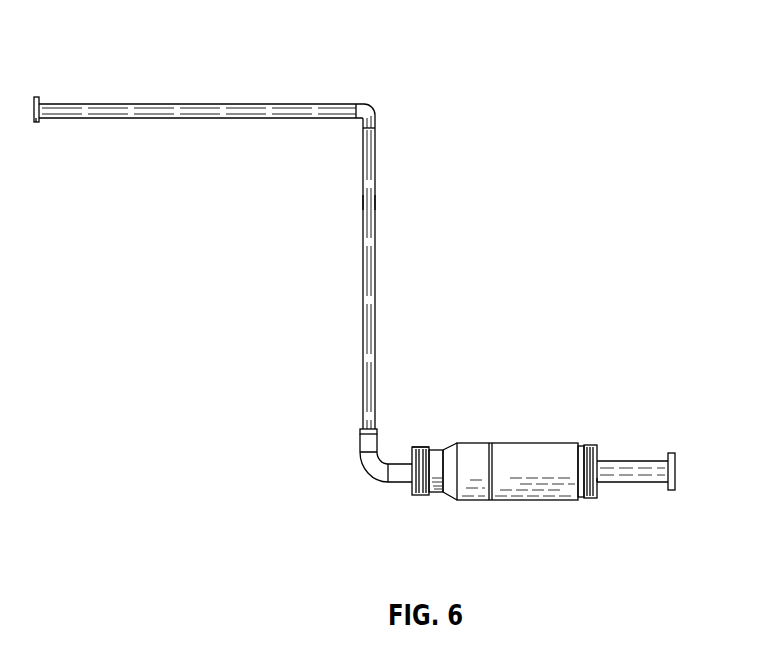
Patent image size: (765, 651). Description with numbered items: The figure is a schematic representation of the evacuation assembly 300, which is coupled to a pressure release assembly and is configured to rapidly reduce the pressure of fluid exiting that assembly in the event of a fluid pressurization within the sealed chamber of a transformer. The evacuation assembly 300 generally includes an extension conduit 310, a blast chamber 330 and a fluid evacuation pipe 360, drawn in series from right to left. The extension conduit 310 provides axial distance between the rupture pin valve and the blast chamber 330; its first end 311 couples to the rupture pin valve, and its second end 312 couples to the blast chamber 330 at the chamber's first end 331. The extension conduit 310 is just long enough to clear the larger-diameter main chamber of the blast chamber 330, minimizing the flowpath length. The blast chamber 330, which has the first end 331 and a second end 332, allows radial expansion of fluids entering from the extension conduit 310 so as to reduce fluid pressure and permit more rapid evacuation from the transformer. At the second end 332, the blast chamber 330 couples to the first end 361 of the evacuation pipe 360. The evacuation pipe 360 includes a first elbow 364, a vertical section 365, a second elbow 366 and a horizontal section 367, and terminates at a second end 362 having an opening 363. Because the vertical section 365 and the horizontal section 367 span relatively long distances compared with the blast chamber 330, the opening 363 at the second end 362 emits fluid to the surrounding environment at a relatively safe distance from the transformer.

The evacuation assembly 300 is at (641, 328).
The extension conduit 310 is at (612, 470).
The first end 311 is at (675, 455).
The second end 312 is at (600, 485).
The blast chamber 330 is at (522, 450).
The first end 331 is at (588, 446).
The second end 332 is at (422, 497).
The fluid evacuation pipe 360 is at (370, 202).
The first end 361 is at (419, 447).
The second end 362 is at (38, 121).
The opening 363 is at (34, 108).
The first elbow 364 is at (378, 466).
The vertical section 365 is at (370, 280).
The second elbow 366 is at (374, 118).
The horizontal section 367 is at (201, 105).